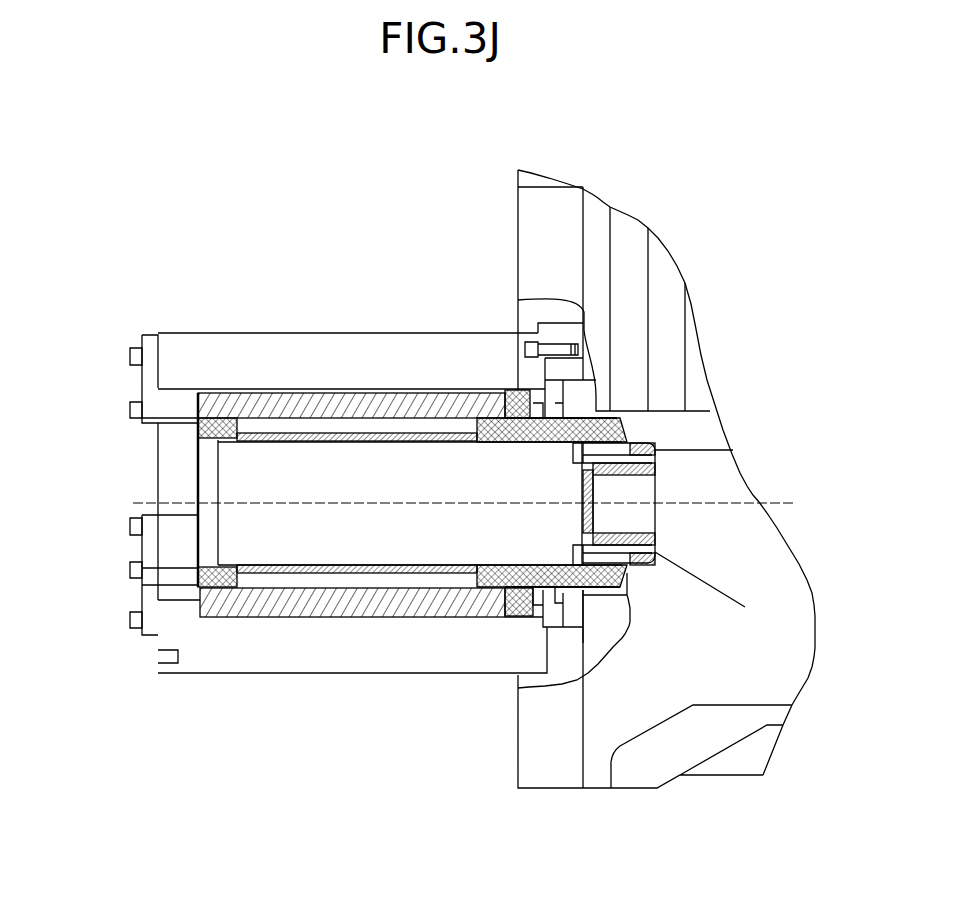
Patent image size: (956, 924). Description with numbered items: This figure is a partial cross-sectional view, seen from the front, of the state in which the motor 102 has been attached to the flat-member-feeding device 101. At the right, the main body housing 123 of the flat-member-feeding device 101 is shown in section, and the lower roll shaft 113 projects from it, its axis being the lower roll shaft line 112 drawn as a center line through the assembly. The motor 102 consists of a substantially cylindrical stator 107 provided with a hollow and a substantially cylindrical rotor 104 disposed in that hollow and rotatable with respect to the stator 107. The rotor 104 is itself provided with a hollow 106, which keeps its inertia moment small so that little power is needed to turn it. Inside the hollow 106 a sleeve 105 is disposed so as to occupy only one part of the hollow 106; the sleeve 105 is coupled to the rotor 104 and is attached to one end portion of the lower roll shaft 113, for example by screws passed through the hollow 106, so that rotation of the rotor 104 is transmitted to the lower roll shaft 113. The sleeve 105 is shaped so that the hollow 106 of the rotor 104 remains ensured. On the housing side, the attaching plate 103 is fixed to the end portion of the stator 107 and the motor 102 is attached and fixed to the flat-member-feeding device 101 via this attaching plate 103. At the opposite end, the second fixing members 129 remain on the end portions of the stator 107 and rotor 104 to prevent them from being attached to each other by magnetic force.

The flat-member-feeding device 101 is at (625, 162).
The motor 102 is at (351, 318).
The attaching plate 103 is at (590, 392).
The rotor 104 is at (318, 603).
The sleeve 105 is at (612, 405).
The hollow 106 is at (237, 473).
The stator 107 is at (368, 650).
The lower roll shaft line 112 is at (722, 500).
The lower roll shaft 113 is at (658, 450).
The main body housing 123 is at (626, 230).
The second fixing members 129 is at (152, 386).